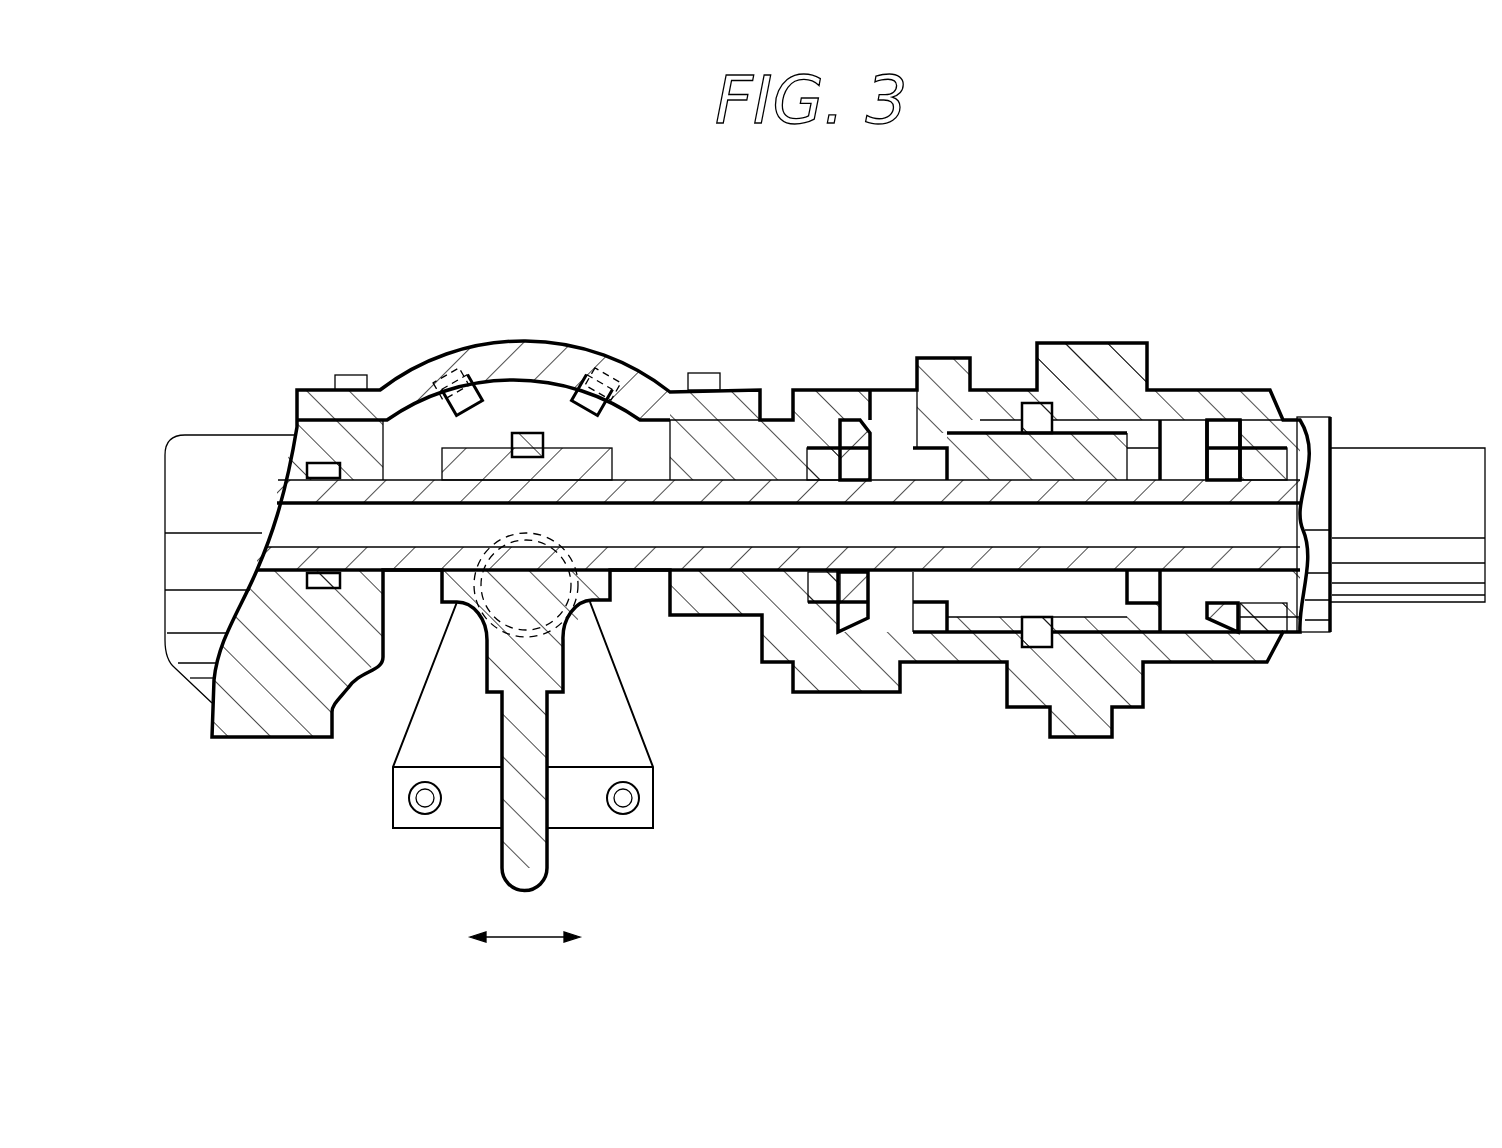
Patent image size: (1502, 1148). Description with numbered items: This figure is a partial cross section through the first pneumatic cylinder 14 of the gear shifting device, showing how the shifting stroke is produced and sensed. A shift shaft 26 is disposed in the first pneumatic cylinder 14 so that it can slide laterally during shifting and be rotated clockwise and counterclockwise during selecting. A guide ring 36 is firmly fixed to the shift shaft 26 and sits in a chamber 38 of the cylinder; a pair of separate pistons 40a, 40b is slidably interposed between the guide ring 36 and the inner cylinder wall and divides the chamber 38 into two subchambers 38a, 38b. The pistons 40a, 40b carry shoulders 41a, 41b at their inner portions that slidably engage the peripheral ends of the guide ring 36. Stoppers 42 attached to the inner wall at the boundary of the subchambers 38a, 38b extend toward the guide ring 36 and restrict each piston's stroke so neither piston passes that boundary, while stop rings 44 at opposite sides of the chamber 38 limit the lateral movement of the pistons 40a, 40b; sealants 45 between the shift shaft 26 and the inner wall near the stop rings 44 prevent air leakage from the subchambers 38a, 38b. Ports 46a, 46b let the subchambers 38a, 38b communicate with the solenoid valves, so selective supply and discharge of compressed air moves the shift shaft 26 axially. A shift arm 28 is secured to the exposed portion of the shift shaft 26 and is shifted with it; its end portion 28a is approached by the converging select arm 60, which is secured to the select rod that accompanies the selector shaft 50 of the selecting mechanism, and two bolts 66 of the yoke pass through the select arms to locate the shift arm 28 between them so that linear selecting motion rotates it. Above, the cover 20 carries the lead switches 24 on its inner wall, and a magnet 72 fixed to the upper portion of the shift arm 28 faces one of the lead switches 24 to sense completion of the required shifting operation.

The first pneumatic cylinder 14 is at (1403, 436).
The cover 20 is at (598, 362).
The lead switches 24 is at (455, 393).
The shift shaft 26 is at (293, 497).
The shift arm 28 is at (565, 667).
The end portion of the shift arm 28a is at (530, 857).
The guide ring 36 is at (1097, 450).
The chamber 38 is at (893, 600).
The subchamber 38a is at (887, 455).
The subchamber 38b is at (1188, 443).
The piston 40a is at (943, 440).
The piston 40b is at (1140, 440).
The shoulder 41a is at (948, 620).
The shoulder 41b is at (1157, 657).
The stoppers 42 is at (1030, 412).
The stop rings 44 is at (855, 608).
The sealants 45 is at (830, 580).
The port 46a is at (858, 415).
The port 46b is at (1203, 425).
The selector shaft 50 is at (542, 592).
The select arm 60 is at (650, 742).
The bolts 66 is at (411, 797).
The magnet 72 is at (527, 433).